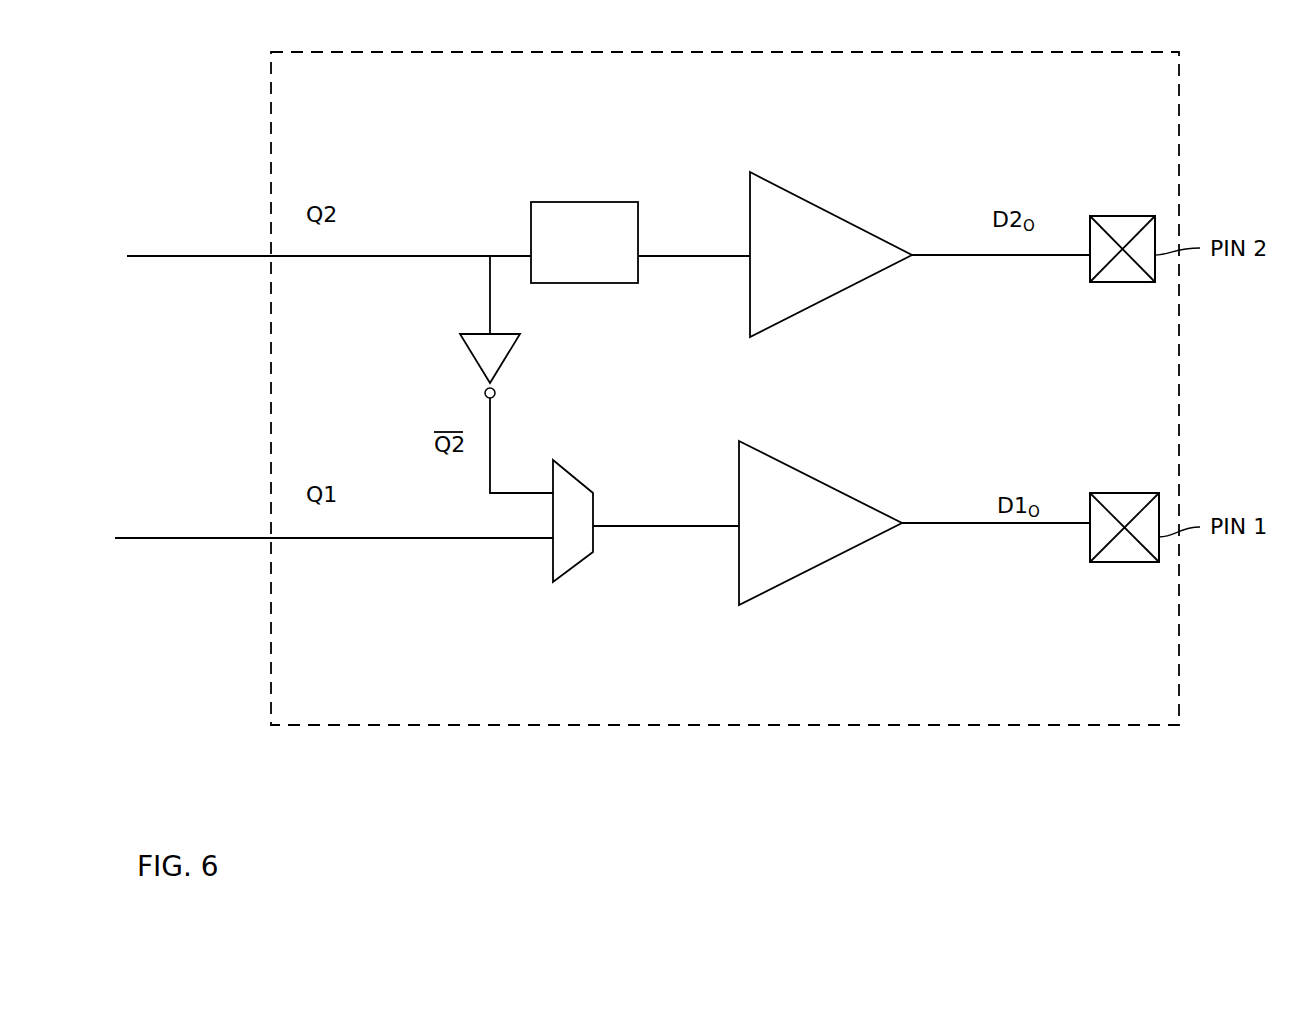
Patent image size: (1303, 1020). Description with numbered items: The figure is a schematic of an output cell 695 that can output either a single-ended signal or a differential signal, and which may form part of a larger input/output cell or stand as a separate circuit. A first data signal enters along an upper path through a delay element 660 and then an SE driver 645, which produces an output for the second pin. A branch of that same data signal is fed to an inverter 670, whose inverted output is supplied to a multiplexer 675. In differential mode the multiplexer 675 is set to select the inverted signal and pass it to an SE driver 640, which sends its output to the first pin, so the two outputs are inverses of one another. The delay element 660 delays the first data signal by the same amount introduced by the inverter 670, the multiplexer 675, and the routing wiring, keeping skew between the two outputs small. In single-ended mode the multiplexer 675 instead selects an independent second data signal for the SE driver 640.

The output cell 695 is at (725, 388).
The delay element 660 is at (558, 202).
The SE driver 645 is at (750, 185).
The inverter 670 is at (515, 351).
The multiplexer 675 is at (572, 567).
The SE driver 640 is at (853, 548).